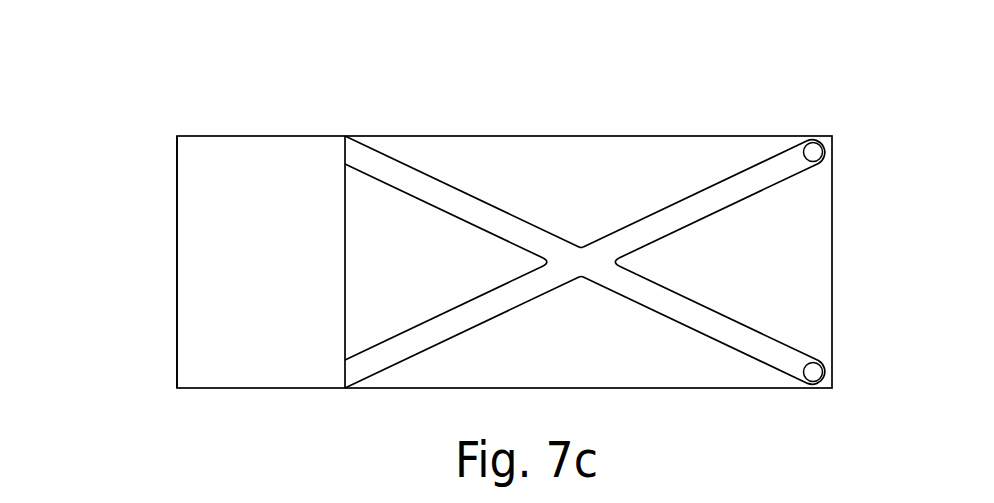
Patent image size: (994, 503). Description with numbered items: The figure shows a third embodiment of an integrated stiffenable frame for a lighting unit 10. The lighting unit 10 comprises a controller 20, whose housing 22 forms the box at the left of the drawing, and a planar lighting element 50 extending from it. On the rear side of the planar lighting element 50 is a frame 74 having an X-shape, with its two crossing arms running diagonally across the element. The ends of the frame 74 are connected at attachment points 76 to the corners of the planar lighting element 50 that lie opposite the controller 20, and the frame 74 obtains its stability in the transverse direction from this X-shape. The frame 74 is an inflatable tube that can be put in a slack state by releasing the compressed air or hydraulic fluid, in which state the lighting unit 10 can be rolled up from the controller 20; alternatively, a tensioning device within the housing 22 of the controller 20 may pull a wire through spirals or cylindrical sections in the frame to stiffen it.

The lighting unit 10 is at (122, 257).
The controller 20 is at (256, 136).
The housing 22 is at (192, 347).
The planar lighting element 50 is at (552, 136).
The frame 74 is at (754, 175).
The attachment points 76 is at (818, 137).